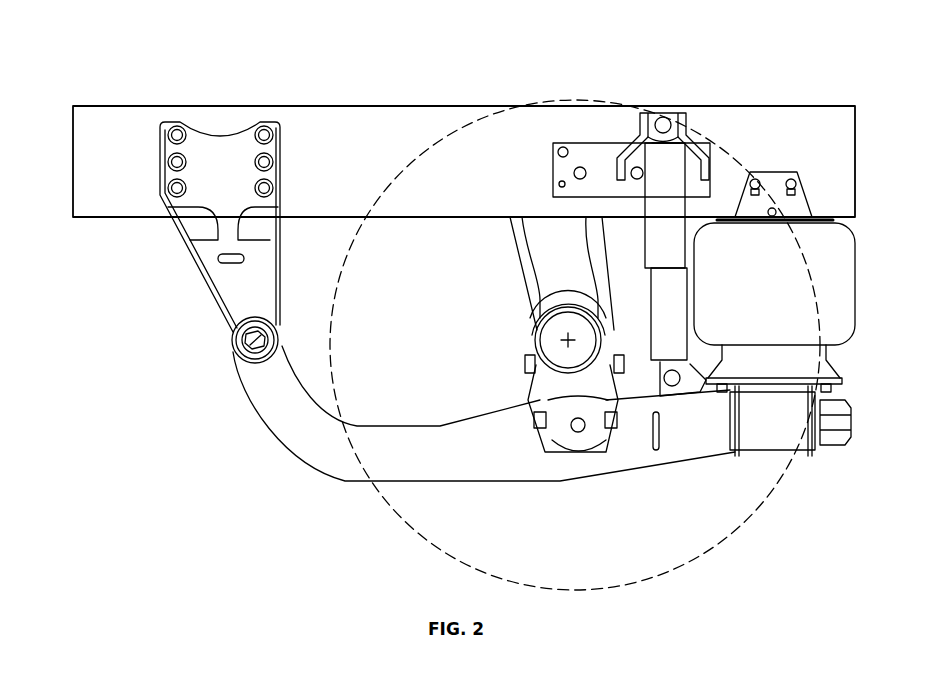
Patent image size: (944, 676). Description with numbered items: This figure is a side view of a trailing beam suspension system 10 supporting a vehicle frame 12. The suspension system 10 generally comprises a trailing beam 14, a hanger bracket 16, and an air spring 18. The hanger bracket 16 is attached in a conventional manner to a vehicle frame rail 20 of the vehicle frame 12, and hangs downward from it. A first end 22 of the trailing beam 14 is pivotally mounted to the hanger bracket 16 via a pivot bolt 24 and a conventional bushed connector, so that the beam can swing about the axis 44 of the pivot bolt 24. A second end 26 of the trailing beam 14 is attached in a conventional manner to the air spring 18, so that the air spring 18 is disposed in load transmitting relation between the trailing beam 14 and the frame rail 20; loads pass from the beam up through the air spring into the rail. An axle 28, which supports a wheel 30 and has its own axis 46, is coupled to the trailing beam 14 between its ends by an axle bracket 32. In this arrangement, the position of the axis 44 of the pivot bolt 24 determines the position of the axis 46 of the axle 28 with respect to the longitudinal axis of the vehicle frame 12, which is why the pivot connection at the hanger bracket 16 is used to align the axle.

The trailing beam suspension system 10 is at (258, 436).
The vehicle frame 12 is at (571, 104).
The trailing beam 14 is at (432, 483).
The hanger bracket 16 is at (184, 257).
The air spring 18 is at (855, 266).
The vehicle frame rail 20 is at (766, 117).
The first end 22 is at (250, 378).
The pivot bolt 24 is at (276, 332).
The second end 26 is at (725, 456).
The axle 28 is at (540, 323).
The wheel 30 is at (447, 134).
The axle bracket 32 is at (535, 380).
The axis 44 is at (235, 356).
The axis 46 is at (560, 341).